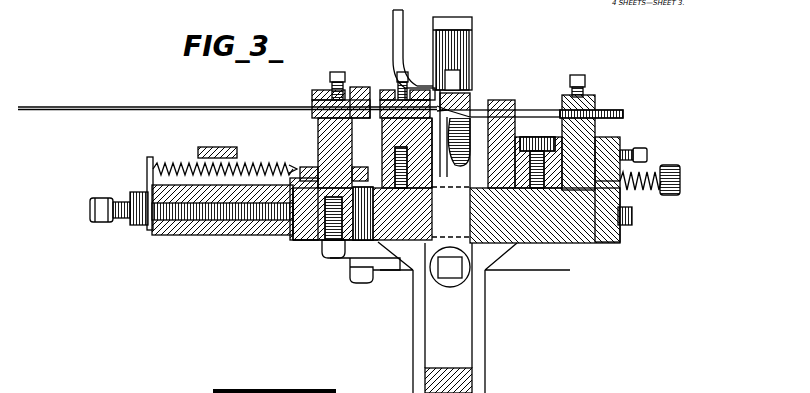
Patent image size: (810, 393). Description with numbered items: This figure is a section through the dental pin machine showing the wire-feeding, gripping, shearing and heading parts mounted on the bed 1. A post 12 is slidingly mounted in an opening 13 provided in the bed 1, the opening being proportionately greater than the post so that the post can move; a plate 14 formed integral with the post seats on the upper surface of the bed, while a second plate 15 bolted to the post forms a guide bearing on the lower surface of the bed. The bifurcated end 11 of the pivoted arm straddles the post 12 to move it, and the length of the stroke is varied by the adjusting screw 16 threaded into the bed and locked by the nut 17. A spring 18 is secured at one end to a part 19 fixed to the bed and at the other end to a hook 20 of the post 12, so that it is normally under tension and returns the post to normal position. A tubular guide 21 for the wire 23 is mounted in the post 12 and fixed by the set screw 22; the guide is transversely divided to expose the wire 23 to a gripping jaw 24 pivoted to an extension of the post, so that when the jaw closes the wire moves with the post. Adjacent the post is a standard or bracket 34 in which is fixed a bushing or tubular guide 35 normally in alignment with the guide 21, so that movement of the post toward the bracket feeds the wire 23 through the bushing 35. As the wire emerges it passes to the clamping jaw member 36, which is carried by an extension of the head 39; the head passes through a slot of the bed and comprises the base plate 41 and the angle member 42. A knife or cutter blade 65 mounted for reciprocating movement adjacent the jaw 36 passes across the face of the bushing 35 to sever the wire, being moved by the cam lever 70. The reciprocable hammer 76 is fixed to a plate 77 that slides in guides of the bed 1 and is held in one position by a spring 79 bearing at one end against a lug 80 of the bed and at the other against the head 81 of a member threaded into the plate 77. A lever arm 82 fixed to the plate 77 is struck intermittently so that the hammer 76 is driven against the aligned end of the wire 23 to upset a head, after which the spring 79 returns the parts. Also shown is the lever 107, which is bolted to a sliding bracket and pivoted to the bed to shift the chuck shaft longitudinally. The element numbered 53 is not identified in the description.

The bed 1 is at (165, 225).
The bifurcated end of arm 11 is at (308, 167).
The post 12 is at (318, 126).
The opening 13 is at (352, 245).
The plate 14 is at (362, 245).
The second plate 15 is at (296, 242).
The adjusting screw 16 is at (125, 200).
The nut 17 is at (137, 225).
The spring 18 is at (175, 163).
The part fixed to bed 19 is at (146, 170).
The hook 20 is at (288, 165).
The tubular guide 21 is at (312, 102).
The set screw 22 is at (328, 88).
The wire 23 is at (244, 106).
The gripping jaw 24 is at (360, 87).
The standard or bracket 34 is at (382, 126).
The bushing or tubular guide 35 is at (395, 88).
The clamping jaw member 36 is at (470, 95).
The head 39 is at (449, 255).
The base plate 41 is at (490, 250).
The angle member 42 is at (472, 380).
The cylinder 53 is at (472, 45).
The knife or cutter blade 65 is at (420, 88).
The cam lever 70 is at (392, 20).
The reciprocable hammer 76 is at (534, 137).
The plate 77 is at (598, 130).
The spring 79 is at (650, 175).
The lug 80 is at (620, 200).
The head 81 is at (680, 170).
The lever arm 82 is at (577, 75).
The lever 107 is at (216, 147).